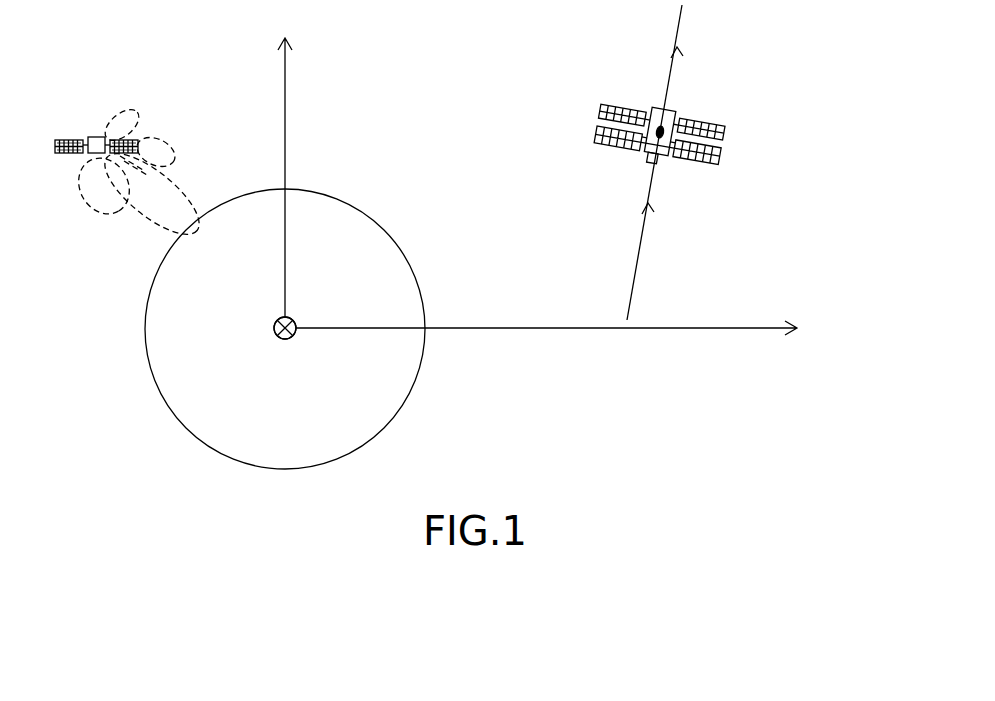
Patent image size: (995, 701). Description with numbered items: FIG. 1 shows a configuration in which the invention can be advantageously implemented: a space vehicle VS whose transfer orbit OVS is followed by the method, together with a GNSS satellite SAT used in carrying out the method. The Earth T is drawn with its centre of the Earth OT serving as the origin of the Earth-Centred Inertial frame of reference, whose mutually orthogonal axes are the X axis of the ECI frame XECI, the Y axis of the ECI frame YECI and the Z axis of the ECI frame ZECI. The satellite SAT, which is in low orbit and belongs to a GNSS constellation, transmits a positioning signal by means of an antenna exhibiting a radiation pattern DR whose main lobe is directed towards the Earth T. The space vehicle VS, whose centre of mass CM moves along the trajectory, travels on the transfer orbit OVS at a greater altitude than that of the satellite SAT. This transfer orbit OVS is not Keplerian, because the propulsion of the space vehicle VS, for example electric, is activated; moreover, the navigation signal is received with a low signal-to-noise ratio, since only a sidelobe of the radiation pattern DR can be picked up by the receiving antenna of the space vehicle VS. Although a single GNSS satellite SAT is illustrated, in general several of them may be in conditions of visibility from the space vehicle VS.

The satellite SAT is at (102, 137).
The radiation pattern DR is at (183, 187).
The Earth T is at (390, 423).
The centre of the Earth OT is at (273, 331).
The Z axis of the ECI frame ZECI is at (312, 172).
The X axis of the ECI frame XECI is at (576, 333).
The Y axis of the ECI frame YECI is at (288, 339).
The space vehicle VS is at (678, 117).
The centre of mass CM is at (662, 140).
The transfer orbit OVS is at (642, 248).